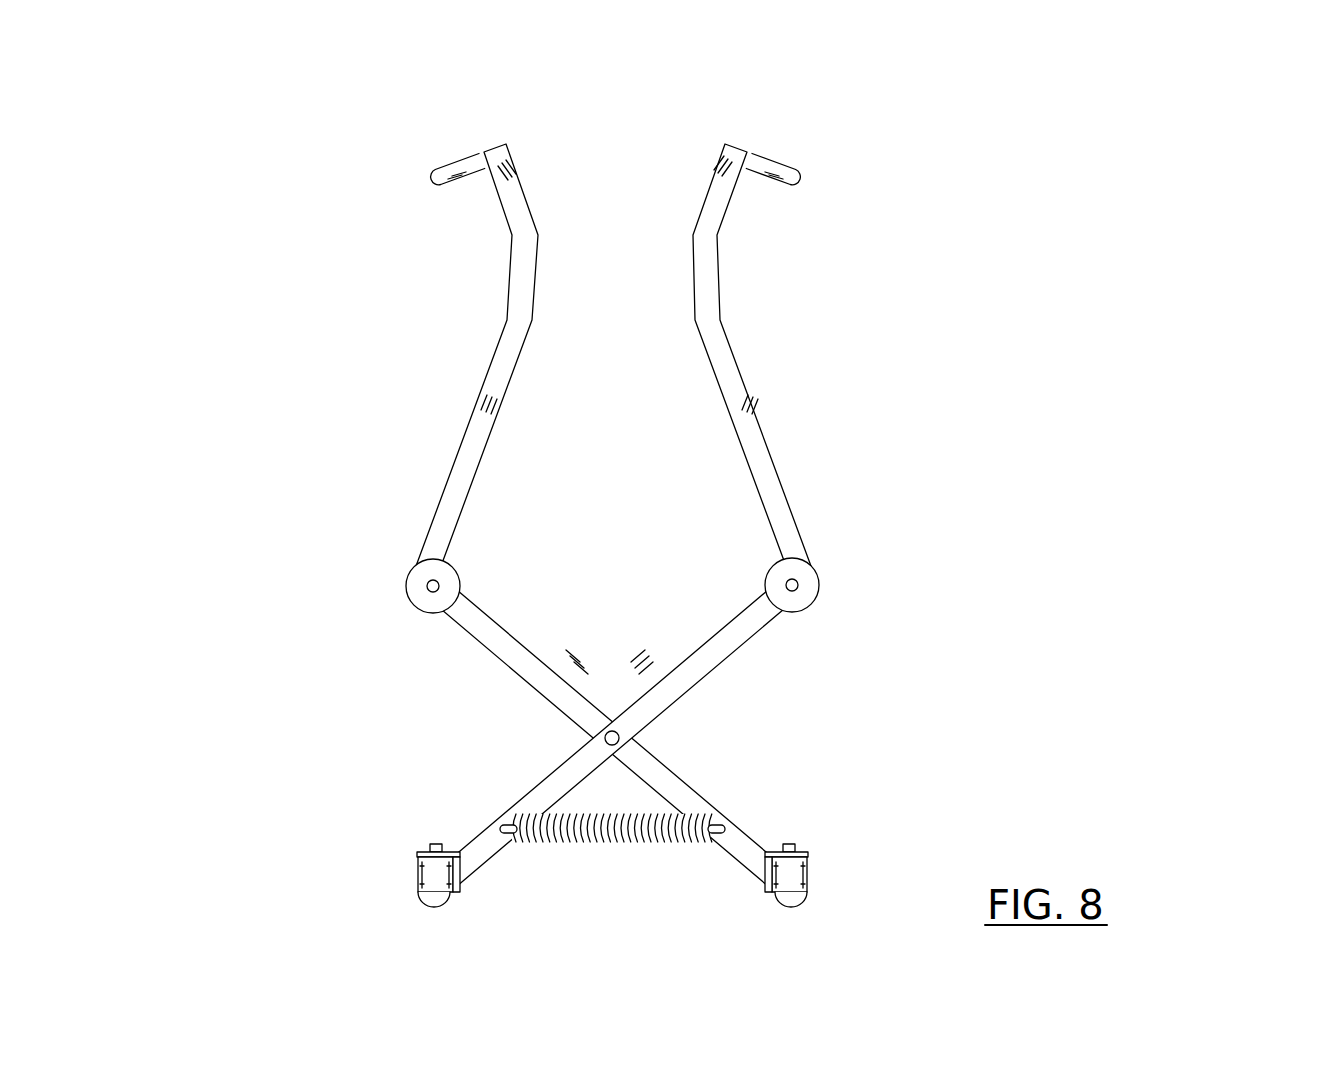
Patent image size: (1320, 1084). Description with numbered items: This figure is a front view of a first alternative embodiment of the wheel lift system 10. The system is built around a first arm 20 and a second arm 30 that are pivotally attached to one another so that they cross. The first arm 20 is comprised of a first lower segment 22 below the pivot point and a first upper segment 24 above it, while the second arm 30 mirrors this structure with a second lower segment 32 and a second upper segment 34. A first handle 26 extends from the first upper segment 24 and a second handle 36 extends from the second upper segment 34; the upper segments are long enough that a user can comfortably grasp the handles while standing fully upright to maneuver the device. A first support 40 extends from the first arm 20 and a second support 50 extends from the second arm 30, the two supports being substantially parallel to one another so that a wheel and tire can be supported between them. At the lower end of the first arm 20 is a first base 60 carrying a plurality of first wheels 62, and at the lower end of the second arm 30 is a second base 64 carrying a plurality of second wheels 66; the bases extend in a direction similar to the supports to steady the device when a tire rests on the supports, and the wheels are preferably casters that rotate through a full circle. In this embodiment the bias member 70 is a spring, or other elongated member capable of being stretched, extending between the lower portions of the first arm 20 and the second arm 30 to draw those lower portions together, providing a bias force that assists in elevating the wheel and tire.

The wheel lift system 10 is at (1048, 158).
The first arm 20 is at (467, 630).
The first lower segment 22 is at (543, 698).
The first upper segment 24 is at (460, 452).
The first handle 26 is at (447, 163).
The second arm 30 is at (763, 627).
The second lower segment 32 is at (692, 690).
The second upper segment 34 is at (770, 430).
The second handle 36 is at (772, 156).
The first support 40 is at (407, 573).
The second support 50 is at (820, 575).
The first base 60 is at (421, 850).
The first wheels 62 is at (433, 908).
The second base 64 is at (806, 851).
The second wheels 66 is at (801, 907).
The bias member 70 is at (604, 844).